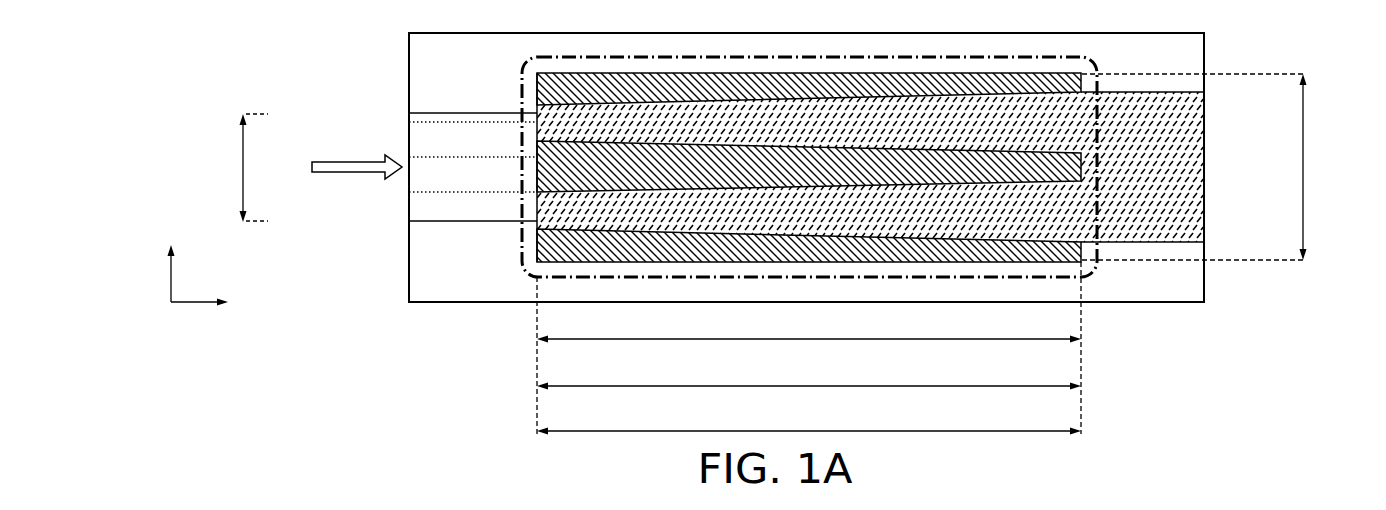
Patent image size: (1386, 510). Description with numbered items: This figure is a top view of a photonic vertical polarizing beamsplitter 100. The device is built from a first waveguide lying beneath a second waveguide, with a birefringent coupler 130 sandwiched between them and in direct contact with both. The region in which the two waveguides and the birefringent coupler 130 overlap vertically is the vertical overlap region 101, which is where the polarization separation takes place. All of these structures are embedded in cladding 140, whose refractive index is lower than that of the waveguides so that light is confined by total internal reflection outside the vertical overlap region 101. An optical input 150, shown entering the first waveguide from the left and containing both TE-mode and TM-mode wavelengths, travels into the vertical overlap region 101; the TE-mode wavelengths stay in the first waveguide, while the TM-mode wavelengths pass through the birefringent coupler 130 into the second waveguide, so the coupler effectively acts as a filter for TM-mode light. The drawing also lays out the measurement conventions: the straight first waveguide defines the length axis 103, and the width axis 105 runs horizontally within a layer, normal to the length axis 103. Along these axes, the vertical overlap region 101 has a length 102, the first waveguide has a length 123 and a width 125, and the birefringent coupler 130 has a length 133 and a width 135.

The photonic vertical polarizing beamsplitter 100 is at (188, 40).
The cladding 140 is at (420, 68).
The vertical overlap region 101 is at (1097, 163).
The birefringent coupler 130 is at (1067, 83).
The optical input 150 is at (337, 154).
The width 125 is at (236, 168).
The width axis 105 is at (172, 260).
The length axis 103 is at (221, 301).
The width 135 is at (1215, 167).
The length 102 is at (809, 328).
The length 123 is at (809, 374).
The length 133 is at (809, 419).